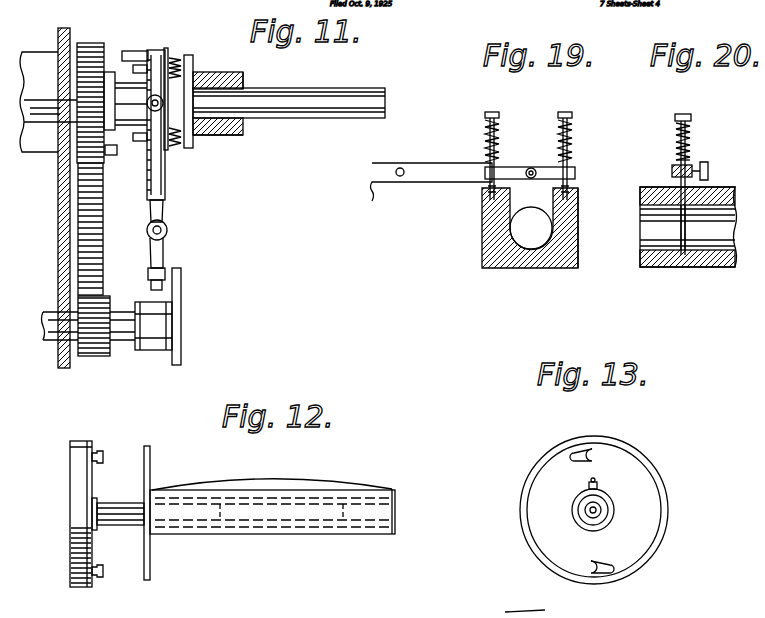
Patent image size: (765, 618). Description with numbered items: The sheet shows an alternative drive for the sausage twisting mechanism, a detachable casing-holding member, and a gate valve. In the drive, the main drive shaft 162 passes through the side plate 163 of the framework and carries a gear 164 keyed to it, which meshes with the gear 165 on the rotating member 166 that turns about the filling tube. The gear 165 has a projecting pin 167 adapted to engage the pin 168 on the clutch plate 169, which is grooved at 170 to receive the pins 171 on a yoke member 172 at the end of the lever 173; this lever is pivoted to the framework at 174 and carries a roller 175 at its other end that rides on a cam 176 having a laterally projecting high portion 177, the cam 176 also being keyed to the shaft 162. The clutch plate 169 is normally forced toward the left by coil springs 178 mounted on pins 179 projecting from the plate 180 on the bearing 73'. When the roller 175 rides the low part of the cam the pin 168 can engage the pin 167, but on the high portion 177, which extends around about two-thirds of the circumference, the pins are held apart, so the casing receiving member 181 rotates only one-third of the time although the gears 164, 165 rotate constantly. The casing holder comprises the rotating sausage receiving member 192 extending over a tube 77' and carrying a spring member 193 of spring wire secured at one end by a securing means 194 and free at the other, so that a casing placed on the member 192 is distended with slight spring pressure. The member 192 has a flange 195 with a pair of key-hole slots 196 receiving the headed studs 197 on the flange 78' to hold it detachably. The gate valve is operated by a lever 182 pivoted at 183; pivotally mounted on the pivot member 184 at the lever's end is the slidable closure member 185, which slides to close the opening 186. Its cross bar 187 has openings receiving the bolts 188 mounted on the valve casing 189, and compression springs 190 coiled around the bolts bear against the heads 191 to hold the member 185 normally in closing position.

In FIG. 11, the main drive shaft 162 is at (56, 338).
In FIG. 11, the side plate 163 is at (60, 232).
In FIG. 11, the gear 164 is at (88, 262).
In FIG. 11, the gear 165 is at (93, 55).
In FIG. 11, the rotating member 166 is at (109, 90).
In FIG. 11, the projecting pin 167 is at (112, 157).
In FIG. 11, the pin 168 is at (133, 57).
In FIG. 11, the clutch plate 169 is at (166, 62).
In FIG. 11, the groove 170 is at (190, 56).
In FIG. 11, the pins 171 is at (148, 103).
In FIG. 11, the yoke member 172 is at (155, 160).
In FIG. 11, the lever 173 is at (163, 205).
In FIG. 11, the pivot 174 is at (150, 236).
In FIG. 11, the roller 175 is at (164, 264).
In FIG. 11, the cam 176 is at (181, 312).
In FIG. 11, the high portion 177 is at (166, 283).
In FIG. 11, the coil springs 178 is at (196, 76).
In FIG. 11, the pins 179 is at (172, 146).
In FIG. 11, the plate 180 is at (212, 135).
In FIG. 11, the casing receiving member 181 is at (326, 100).
In FIG. 11, the bearing 73' is at (265, 70).
In FIG. 19, the lever 182 is at (445, 180).
In FIG. 19, the pivot 183 is at (403, 166).
In FIG. 19, the pivot member 184 is at (534, 168).
In FIG. 19, the closure member 185 is at (524, 193).
In FIG. 20, the closure member 185 is at (686, 238).
In FIG. 19, the opening 186 is at (500, 240).
In FIG. 19, the cross bar 187 is at (504, 168).
In FIG. 20, the cross bar 187 is at (672, 168).
In FIG. 19, the bolts 188 is at (486, 136).
In FIG. 20, the bolts 188 is at (692, 156).
In FIG. 19, the valve casing 189 is at (578, 236).
In FIG. 20, the valve casing 189 is at (640, 198).
In FIG. 19, the compression springs 190 is at (573, 138).
In FIG. 20, the compression springs 190 is at (691, 140).
In FIG. 19, the heads 191 is at (500, 107).
In FIG. 20, the heads 191 is at (690, 108).
In FIG. 12, the flange 78' is at (61, 514).
In FIG. 12, the tube 77' is at (118, 528).
In FIG. 13, the tube 77' is at (637, 529).
In FIG. 12, the rotating sausage receiving member 192 is at (366, 509).
In FIG. 13, the rotating sausage receiving member 192 is at (614, 506).
In FIG. 12, the spring member 193 is at (307, 483).
In FIG. 13, the spring member 193 is at (596, 478).
In FIG. 12, the securing means 194 is at (385, 489).
In FIG. 12, the flange 195 is at (150, 470).
In FIG. 13, the flange 195 is at (556, 470).
In FIG. 13, the key-hole slots 196 is at (594, 449).
In FIG. 12, the headed studs 197 is at (103, 456).